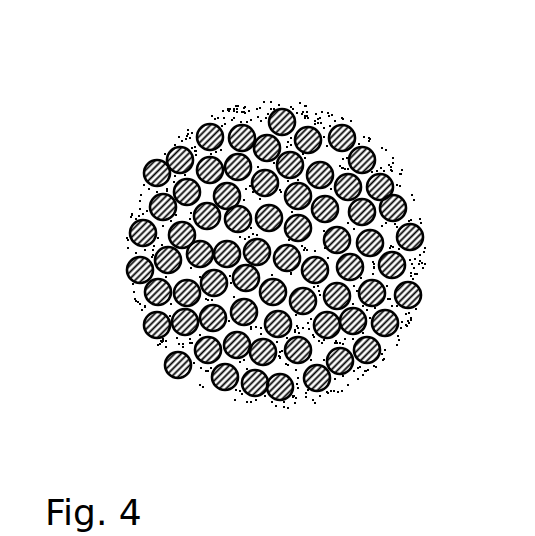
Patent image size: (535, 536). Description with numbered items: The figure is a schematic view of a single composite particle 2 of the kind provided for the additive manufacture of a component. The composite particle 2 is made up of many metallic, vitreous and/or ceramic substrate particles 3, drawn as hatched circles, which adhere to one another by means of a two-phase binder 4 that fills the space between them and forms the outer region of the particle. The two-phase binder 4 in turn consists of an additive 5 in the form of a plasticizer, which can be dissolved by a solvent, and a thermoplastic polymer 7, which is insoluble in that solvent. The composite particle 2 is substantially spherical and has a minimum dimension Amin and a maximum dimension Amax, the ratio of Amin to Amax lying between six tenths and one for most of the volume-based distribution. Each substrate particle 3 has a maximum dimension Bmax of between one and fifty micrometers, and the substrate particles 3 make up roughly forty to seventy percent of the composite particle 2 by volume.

The composite particle 2 is at (247, 85).
The substrate particle 3 is at (338, 126).
The two-phase binder 4 is at (422, 262).
The additive 5 is at (401, 350).
The thermoplastic polymer 7 is at (400, 311).
The maximum dimension Amax is at (147, 163).
The minimum dimension Amin is at (216, 392).
The maximum dimension of substrate particle Bmax is at (160, 354).